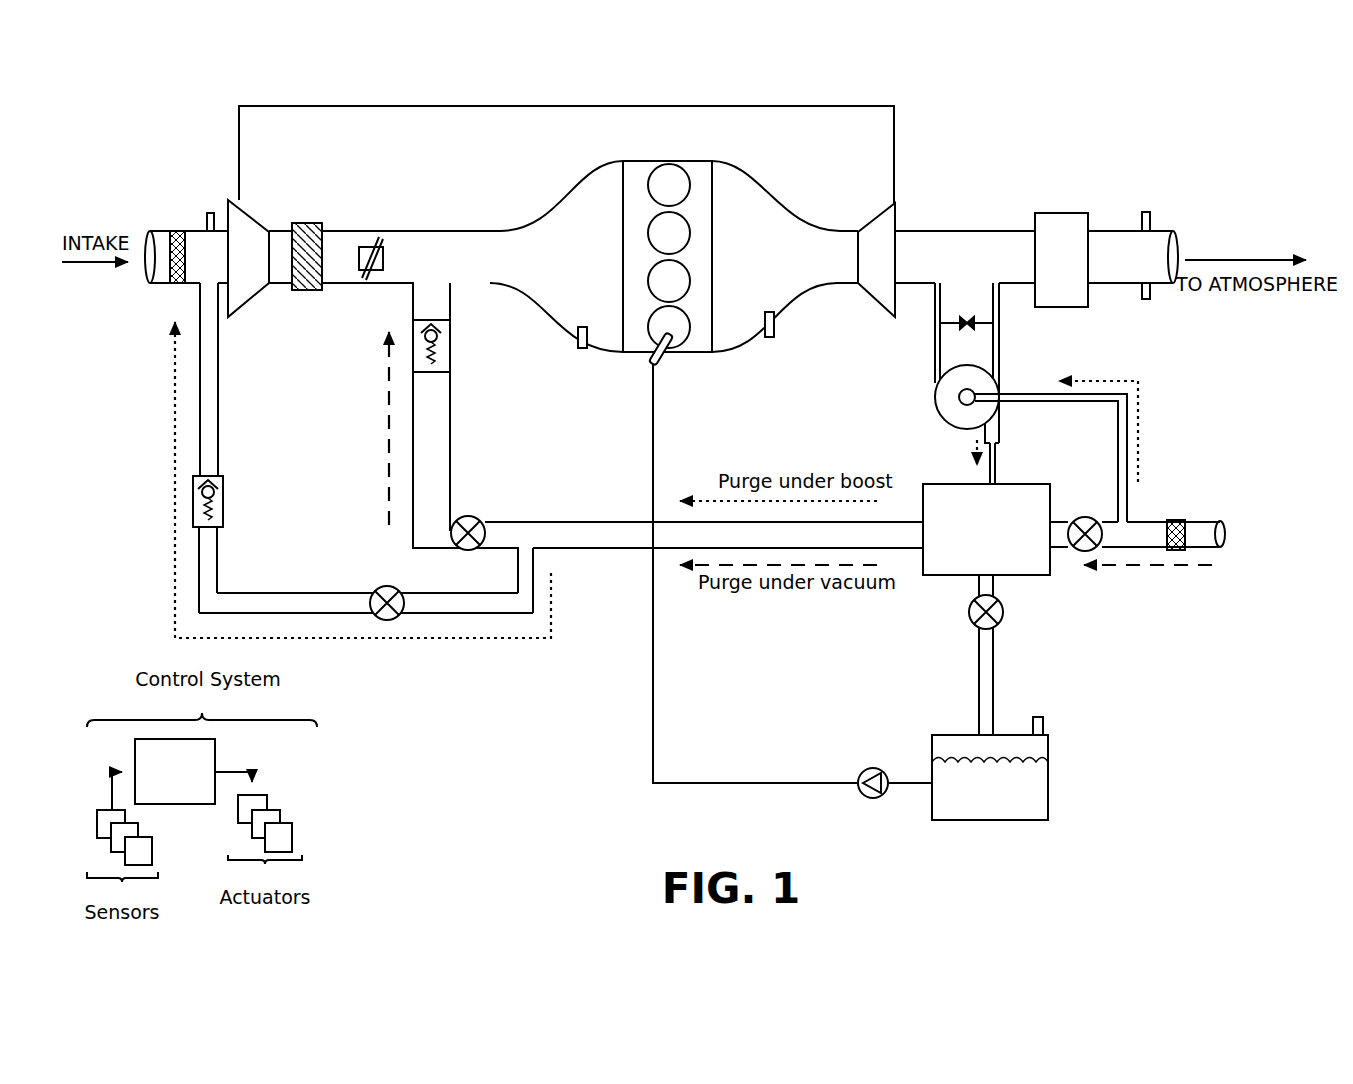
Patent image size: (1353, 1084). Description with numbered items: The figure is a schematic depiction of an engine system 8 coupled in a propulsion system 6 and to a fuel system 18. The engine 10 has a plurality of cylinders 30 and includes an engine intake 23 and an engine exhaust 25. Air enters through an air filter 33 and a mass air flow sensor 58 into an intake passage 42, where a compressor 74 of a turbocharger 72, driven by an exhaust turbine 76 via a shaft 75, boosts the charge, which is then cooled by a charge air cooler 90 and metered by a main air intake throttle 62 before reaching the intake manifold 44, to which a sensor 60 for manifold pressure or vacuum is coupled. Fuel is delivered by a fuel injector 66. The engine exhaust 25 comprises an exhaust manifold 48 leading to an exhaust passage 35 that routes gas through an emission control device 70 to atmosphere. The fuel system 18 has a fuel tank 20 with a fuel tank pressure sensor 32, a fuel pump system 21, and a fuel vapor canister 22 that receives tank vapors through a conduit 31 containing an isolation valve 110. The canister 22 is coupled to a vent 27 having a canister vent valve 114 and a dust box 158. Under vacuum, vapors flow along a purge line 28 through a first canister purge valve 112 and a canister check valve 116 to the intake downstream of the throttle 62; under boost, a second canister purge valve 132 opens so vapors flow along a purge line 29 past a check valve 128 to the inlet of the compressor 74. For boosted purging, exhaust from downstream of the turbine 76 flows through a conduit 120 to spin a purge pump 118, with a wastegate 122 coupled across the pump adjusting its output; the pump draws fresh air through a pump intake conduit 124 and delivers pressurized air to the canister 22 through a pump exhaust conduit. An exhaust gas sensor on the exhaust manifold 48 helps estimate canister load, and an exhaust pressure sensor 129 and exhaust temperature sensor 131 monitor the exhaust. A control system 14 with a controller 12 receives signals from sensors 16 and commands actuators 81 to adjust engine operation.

The propulsion system 6 is at (134, 150).
The engine system 8 is at (1260, 178).
The engine 10 is at (712, 240).
The controller 12 is at (182, 774).
The control system 14 is at (202, 709).
The sensors 16 is at (122, 860).
The fuel system 18 is at (1146, 737).
The fuel tank 20 is at (1049, 798).
The fuel pump system 21 is at (876, 774).
The fuel vapor canister 22 is at (986, 529).
The engine intake 23 is at (553, 188).
The engine exhaust 25 is at (818, 190).
The vent 27 is at (1137, 534).
The purge line 28 is at (704, 567).
The purge line 29 is at (287, 593).
The cylinders 30 is at (687, 180).
The conduit 31 is at (978, 705).
The fuel tank pressure sensor 32 is at (1044, 724).
The air filter 33 is at (178, 230).
The exhaust passage 35 is at (1158, 230).
The intake passage 42 is at (404, 284).
The intake manifold 44 is at (556, 256).
The exhaust manifold 48 is at (776, 256).
The mass air flow sensor 58 is at (208, 220).
The sensor 60 is at (578, 340).
The main air intake throttle 62 is at (383, 260).
The fuel injector 66 is at (658, 360).
The emission control device 70 is at (1061, 260).
The turbocharger 72 is at (948, 142).
The compressor 74 is at (250, 210).
The shaft 75 is at (895, 136).
The exhaust turbine 76 is at (896, 202).
The actuators 81 is at (265, 843).
The charge air cooler 90 is at (310, 223).
The isolation valve 110 is at (969, 610).
The first canister purge valve 112 is at (475, 517).
The canister vent valve 114 is at (1084, 517).
The canister check valve 116 is at (452, 340).
The purge pump 118 is at (1000, 434).
The conduit 120 is at (1000, 360).
The wastegate 122 is at (968, 316).
The pump intake conduit 124 is at (1117, 446).
The check valve 128 is at (224, 507).
The exhaust pressure sensor 129 is at (1141, 220).
The exhaust temperature sensor 131 is at (1141, 290).
The second canister purge valve 132 is at (395, 587).
The dust box 158 is at (1177, 519).